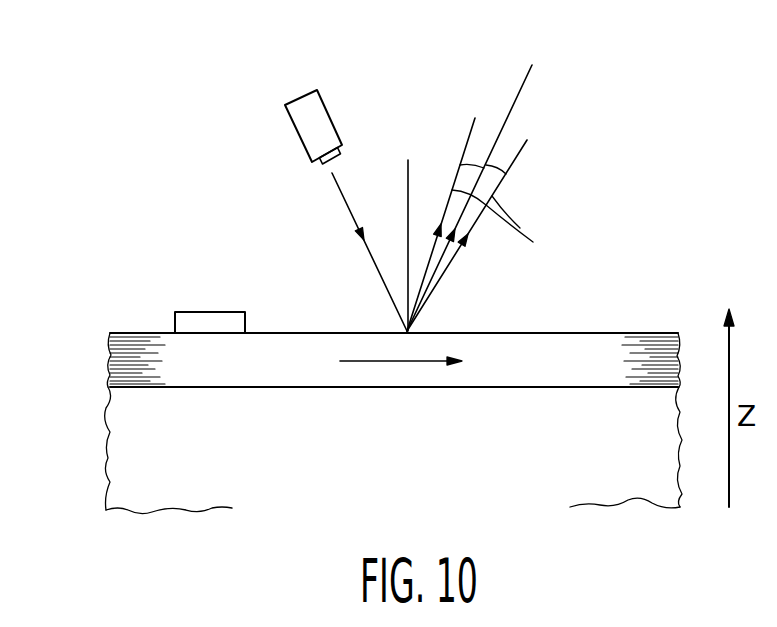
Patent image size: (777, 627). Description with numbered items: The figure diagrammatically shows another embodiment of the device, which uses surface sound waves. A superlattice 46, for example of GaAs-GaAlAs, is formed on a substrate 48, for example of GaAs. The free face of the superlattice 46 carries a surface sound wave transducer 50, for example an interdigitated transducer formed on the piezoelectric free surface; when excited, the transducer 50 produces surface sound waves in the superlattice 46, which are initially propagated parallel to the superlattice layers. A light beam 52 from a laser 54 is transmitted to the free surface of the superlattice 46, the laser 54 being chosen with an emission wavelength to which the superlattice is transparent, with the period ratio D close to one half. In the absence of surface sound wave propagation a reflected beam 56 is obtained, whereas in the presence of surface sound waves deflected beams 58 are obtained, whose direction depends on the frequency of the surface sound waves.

The superlattice 46 is at (110, 352).
The substrate 48 is at (130, 468).
The surface sound wave transducer 50 is at (226, 320).
The light beam 52 is at (350, 208).
The laser 54 is at (305, 118).
The reflected beam 56 is at (519, 99).
The deflected beams 58 is at (498, 217).